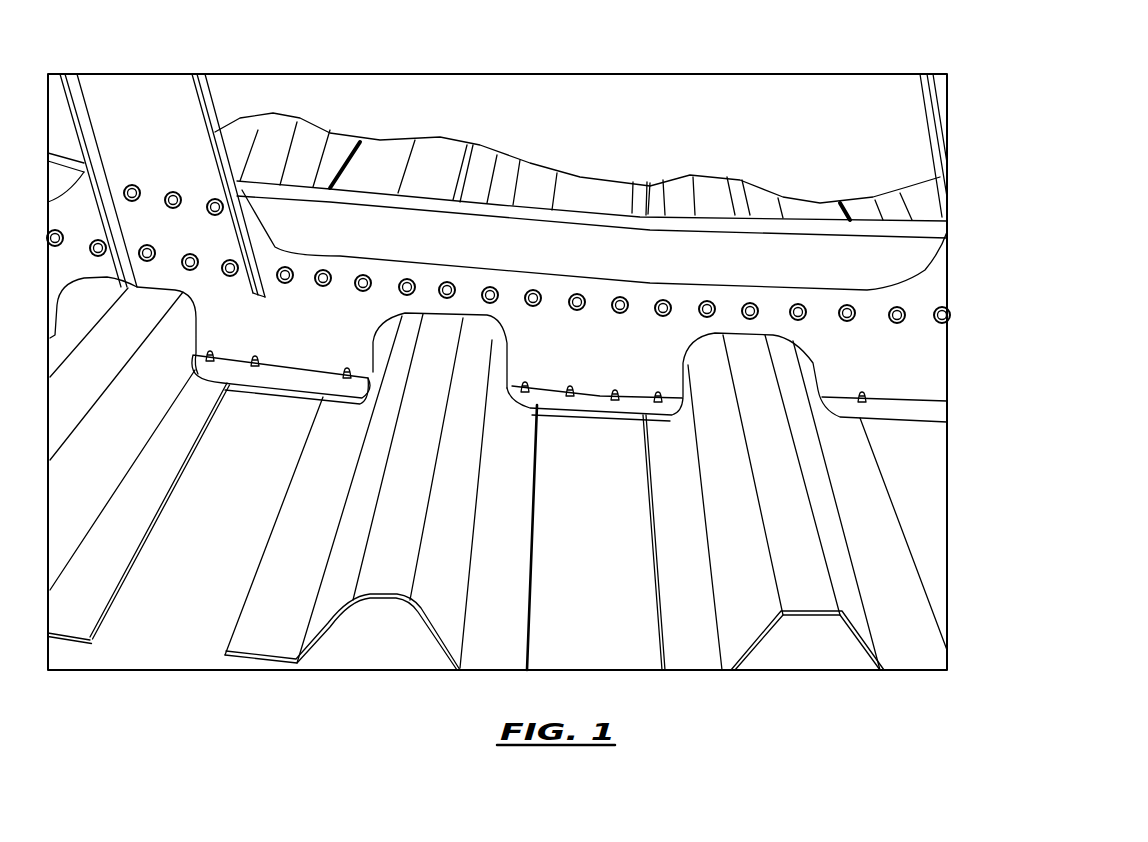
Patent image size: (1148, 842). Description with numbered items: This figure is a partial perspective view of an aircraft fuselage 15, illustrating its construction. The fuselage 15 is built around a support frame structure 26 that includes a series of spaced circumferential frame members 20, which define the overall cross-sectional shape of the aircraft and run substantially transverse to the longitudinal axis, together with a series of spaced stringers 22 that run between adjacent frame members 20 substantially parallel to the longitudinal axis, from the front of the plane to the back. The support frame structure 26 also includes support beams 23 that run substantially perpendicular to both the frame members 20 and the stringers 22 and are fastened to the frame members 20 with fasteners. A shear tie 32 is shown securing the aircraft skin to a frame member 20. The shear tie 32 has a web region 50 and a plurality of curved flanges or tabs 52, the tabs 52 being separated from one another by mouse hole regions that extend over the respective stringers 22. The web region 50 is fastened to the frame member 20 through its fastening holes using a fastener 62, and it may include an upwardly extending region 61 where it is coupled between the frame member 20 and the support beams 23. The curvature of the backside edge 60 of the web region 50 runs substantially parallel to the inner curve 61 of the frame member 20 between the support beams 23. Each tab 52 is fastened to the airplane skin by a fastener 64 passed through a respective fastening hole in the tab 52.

The aircraft fuselage 15 is at (728, 47).
The circumferential frame member 20 is at (393, 222).
The stringer 22 is at (817, 598).
The support beam 23 is at (163, 100).
The support frame structure 26 is at (583, 163).
The shear tie 32 is at (232, 318).
The web region 50 is at (463, 292).
The curved flange (tab) 52 is at (540, 397).
The backside edge 60 is at (687, 283).
The upwardly extending region / inner curve of frame member 61 is at (649, 182).
The fastener 62 is at (799, 308).
The fastener 64 is at (673, 394).